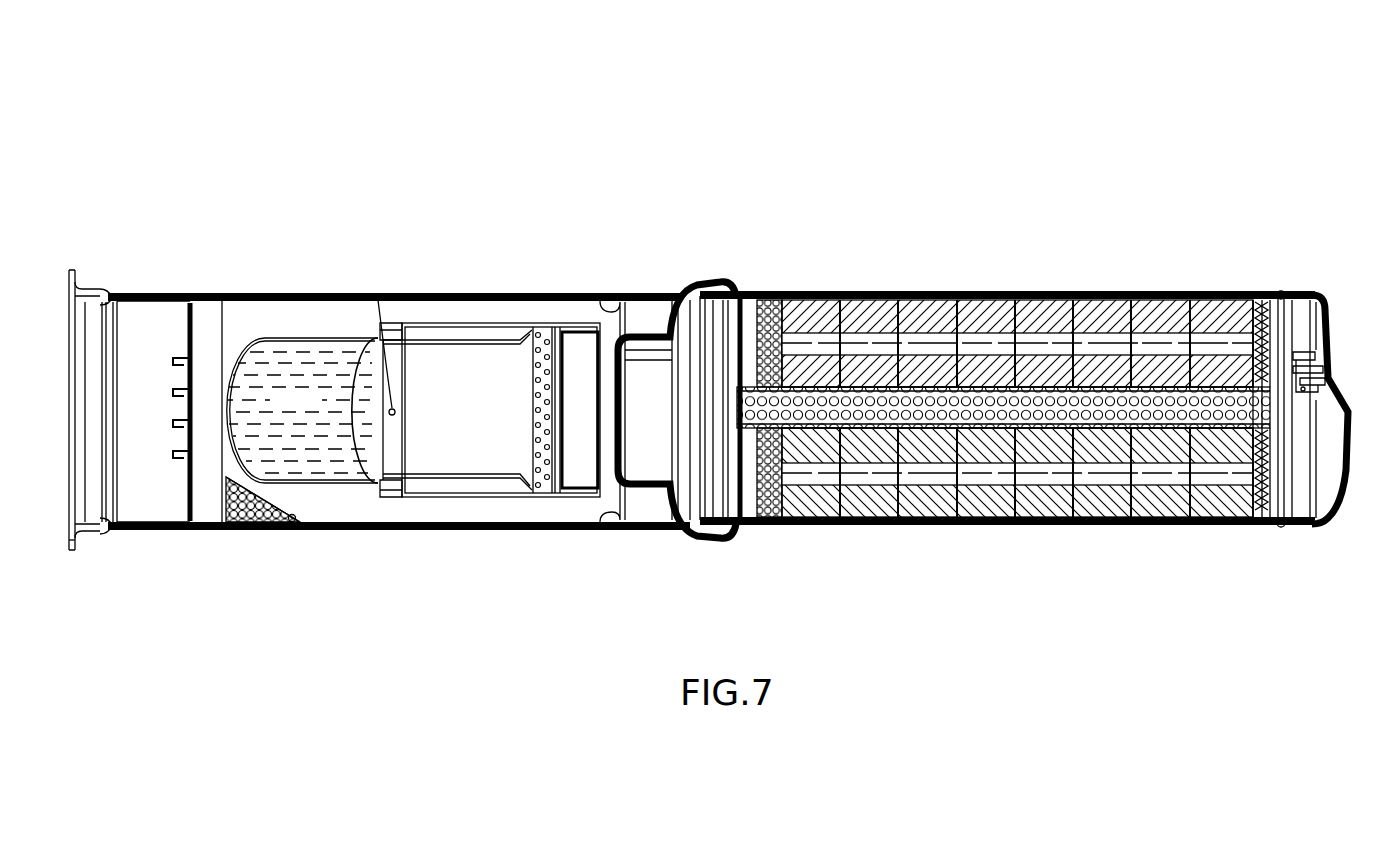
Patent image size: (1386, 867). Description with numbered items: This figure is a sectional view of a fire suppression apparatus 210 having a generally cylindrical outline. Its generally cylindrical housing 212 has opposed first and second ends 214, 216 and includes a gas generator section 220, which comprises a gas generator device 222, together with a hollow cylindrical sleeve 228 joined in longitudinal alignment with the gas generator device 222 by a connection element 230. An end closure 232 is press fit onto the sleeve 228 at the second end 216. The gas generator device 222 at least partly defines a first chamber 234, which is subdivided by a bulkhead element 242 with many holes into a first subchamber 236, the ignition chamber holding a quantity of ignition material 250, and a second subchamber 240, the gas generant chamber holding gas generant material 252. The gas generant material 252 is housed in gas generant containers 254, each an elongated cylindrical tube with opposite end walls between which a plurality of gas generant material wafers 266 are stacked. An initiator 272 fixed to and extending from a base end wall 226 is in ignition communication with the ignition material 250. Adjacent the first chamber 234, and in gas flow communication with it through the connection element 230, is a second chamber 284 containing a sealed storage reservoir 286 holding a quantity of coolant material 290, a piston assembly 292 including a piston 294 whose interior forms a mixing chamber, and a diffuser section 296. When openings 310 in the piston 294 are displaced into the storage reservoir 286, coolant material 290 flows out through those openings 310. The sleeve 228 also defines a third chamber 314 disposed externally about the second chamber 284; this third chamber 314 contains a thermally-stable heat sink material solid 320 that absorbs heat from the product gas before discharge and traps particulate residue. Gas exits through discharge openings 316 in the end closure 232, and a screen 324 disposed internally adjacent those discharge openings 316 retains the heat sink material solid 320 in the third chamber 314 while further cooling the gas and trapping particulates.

The fire suppression apparatus 210 is at (848, 176).
The housing 212 is at (395, 358).
The first end 214 is at (1035, 391).
The second end 216 is at (130, 270).
The gas generator section 220 is at (1005, 287).
The gas generator device 222 is at (853, 532).
The base end wall 226 is at (1331, 507).
The cylindrical sleeve 228 is at (300, 294).
The connection element 230 is at (672, 500).
The end closure 232 is at (96, 540).
The first chamber 234 is at (1082, 386).
The first subchamber 236 is at (1281, 530).
The second subchamber 240 is at (943, 424).
The bulkhead element 242 is at (1258, 512).
The ignition material 250 is at (1258, 298).
The gas generant material 252 is at (1043, 495).
The gas generant containers 254 is at (777, 533).
The gas generant material wafers 266 is at (1100, 507).
The initiator 272 is at (1292, 348).
The second chamber 284 is at (302, 460).
The sealed storage reservoir 286 is at (268, 502).
The coolant material 290 is at (318, 404).
The piston assembly 292 is at (385, 500).
The piston 294 is at (455, 462).
The diffuser section 296 is at (510, 326).
The openings 310 is at (378, 300).
The third chamber 314 is at (250, 316).
The discharge openings 316 is at (184, 466).
The thermally-stable heat sink material solid 320 is at (291, 520).
The screen 324 is at (208, 316).